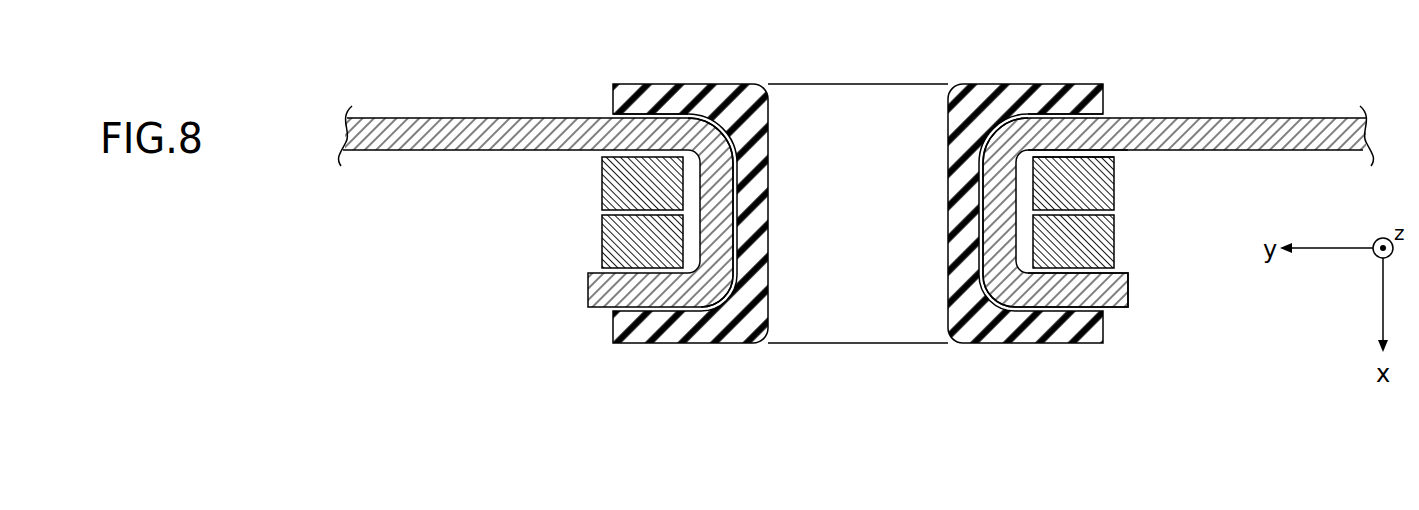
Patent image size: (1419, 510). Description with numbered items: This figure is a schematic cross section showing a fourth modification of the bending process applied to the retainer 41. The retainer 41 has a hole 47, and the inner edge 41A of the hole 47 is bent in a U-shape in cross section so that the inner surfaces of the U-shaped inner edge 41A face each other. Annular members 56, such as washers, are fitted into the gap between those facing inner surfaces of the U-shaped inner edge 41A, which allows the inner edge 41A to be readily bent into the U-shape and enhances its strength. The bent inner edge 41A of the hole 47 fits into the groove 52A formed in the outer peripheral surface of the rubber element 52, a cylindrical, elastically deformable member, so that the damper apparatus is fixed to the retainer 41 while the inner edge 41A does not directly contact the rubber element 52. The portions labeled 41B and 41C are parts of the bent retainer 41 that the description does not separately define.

The retainer 41 is at (484, 117).
The inner edge of the hole of the retainer 41A is at (990, 218).
The lower portion of conductor 41B is at (1070, 262).
The upper portion of conductor 41C is at (1066, 167).
The hole of the retainer 47 is at (869, 126).
The rubber element 52 is at (678, 84).
The groove 52A is at (643, 128).
The annular members 56 is at (1115, 230).